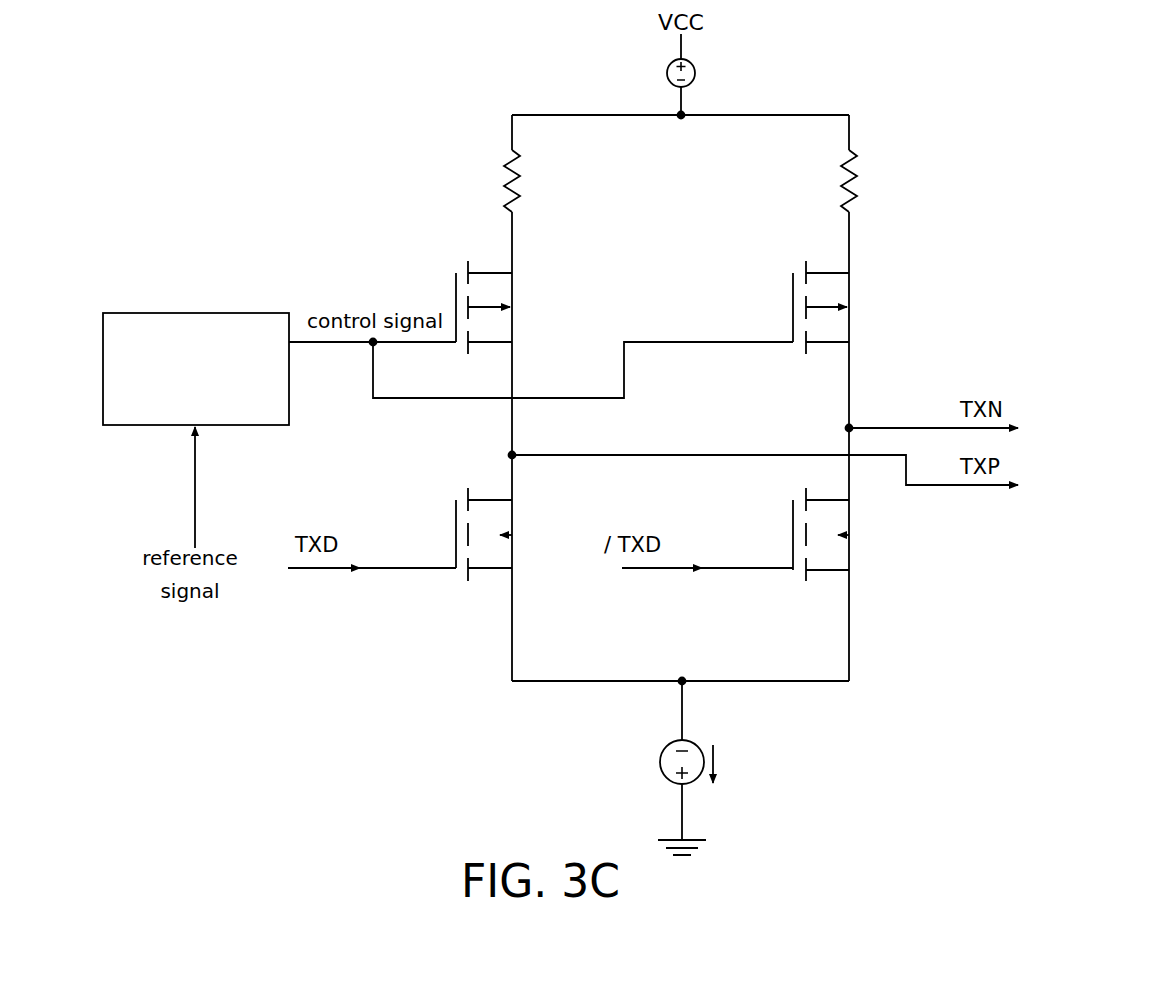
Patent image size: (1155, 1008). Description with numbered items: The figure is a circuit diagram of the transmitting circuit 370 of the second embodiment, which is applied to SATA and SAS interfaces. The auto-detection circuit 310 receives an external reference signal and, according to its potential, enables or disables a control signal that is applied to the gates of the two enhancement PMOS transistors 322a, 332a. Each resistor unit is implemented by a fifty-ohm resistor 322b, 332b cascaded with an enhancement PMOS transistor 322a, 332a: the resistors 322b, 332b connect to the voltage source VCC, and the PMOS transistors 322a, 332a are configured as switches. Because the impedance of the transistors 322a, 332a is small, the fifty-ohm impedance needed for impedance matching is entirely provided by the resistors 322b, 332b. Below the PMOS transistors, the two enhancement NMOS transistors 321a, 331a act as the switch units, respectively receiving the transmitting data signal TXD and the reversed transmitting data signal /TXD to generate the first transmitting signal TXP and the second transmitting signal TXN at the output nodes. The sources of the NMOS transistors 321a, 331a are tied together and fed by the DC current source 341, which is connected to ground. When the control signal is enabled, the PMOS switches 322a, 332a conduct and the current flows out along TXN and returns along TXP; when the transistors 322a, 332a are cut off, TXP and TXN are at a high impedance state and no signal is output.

The auto-detection circuit 310 is at (190, 326).
The enhancement NMOS transistor 321a is at (462, 573).
The enhancement PMOS transistor 322a is at (456, 285).
The 50-ohm resistor 322b is at (508, 189).
The enhancement NMOS transistor 331a is at (851, 553).
The enhancement PMOS transistor 332a is at (850, 323).
The 50-ohm resistor 332b is at (852, 193).
The current source 341 is at (666, 770).
The transmitting circuit 370 is at (1033, 193).